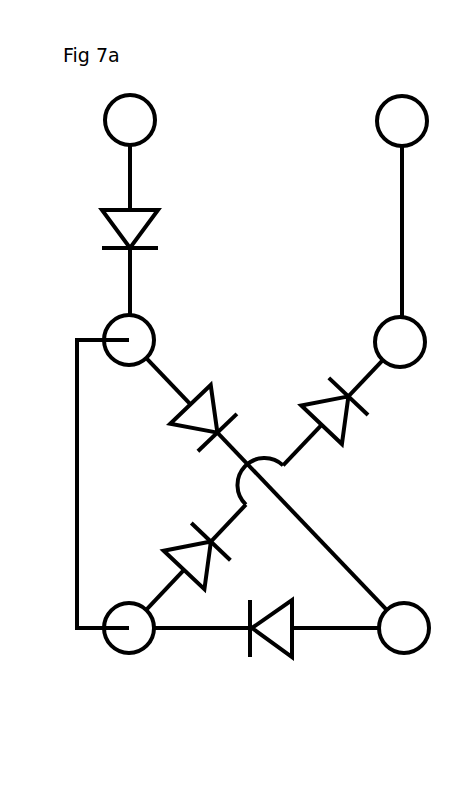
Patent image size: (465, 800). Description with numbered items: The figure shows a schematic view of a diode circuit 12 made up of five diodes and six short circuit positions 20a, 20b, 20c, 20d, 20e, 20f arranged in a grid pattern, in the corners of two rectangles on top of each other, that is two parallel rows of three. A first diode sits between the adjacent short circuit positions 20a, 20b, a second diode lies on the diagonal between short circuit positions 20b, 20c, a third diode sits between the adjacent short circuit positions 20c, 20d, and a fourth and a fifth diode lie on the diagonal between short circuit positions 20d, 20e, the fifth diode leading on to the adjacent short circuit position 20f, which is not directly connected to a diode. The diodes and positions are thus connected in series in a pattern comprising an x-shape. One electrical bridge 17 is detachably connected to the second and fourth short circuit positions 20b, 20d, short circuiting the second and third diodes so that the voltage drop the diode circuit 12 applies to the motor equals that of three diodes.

The diode circuit 12 is at (237, 372).
The electrical bridge 17 is at (86, 337).
The short circuit position 20a is at (162, 133).
The short circuit position 20b is at (165, 327).
The short circuit position 20c is at (397, 662).
The short circuit position 20d is at (128, 667).
The short circuit position 20e is at (408, 372).
The short circuit position 20f is at (371, 137).